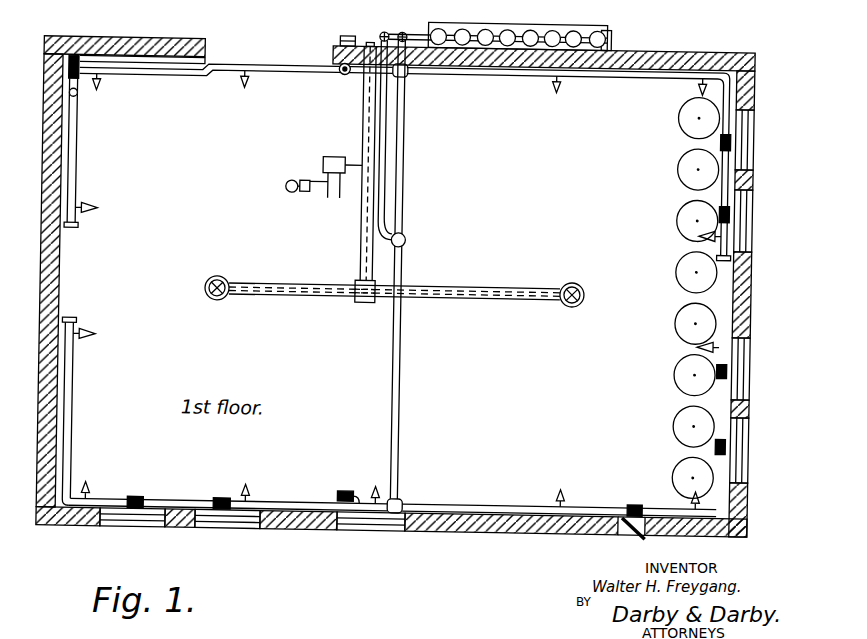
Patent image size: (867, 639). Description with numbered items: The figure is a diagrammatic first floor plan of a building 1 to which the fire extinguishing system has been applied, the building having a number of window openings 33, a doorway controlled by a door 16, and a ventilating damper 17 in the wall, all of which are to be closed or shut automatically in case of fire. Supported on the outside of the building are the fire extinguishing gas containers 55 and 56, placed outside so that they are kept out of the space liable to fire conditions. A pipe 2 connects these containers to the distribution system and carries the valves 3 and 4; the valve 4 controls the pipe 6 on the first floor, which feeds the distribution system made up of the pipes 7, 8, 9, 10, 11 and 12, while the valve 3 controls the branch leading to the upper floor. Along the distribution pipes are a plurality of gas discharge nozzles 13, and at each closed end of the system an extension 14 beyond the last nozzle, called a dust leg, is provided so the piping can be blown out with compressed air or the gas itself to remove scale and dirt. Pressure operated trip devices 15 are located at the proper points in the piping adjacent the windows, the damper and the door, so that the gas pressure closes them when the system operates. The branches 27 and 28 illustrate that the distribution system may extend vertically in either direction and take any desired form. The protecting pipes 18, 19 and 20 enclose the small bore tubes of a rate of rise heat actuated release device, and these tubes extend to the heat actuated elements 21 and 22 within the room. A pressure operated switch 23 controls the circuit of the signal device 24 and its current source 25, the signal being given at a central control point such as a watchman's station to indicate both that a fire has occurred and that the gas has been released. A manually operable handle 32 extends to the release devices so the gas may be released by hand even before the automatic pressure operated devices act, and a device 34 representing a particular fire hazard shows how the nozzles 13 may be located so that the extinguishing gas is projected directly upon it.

The building 1 is at (198, 42).
The pipe 2 is at (473, 22).
The valve 3 is at (399, 32).
The valve 4 is at (379, 32).
The pipe 6 is at (401, 135).
The distribution pipe 7 is at (401, 190).
The distribution pipe 8 is at (401, 380).
The distribution pipe 9 is at (195, 80).
The distribution pipe 10 is at (615, 75).
The distribution pipe 11 is at (205, 504).
The distribution pipe 12 is at (520, 504).
The gas discharge nozzle 13 is at (97, 96).
The dust leg 14 is at (76, 232).
The pressure operated trip device 15 is at (65, 72).
The door 16 is at (158, 68).
The ventilating damper 17 is at (634, 532).
The protecting pipe 18 is at (360, 246).
The protecting pipe 19 is at (318, 298).
The protecting pipe 20 is at (496, 298).
The heat actuated element 21 is at (214, 303).
The heat actuated element 22 is at (578, 304).
The pressure operated switch 23 is at (333, 158).
The signal device 24 is at (300, 198).
The current source 25 is at (333, 199).
The branch 27 is at (66, 100).
The branch 28 is at (337, 74).
The manually operable handle 32 is at (336, 41).
The window opening 33 is at (752, 121).
The fire hazard device 34 is at (686, 222).
The fire extinguishing gas container 55 is at (458, 28).
The fire extinguishing gas container 56 is at (590, 28).